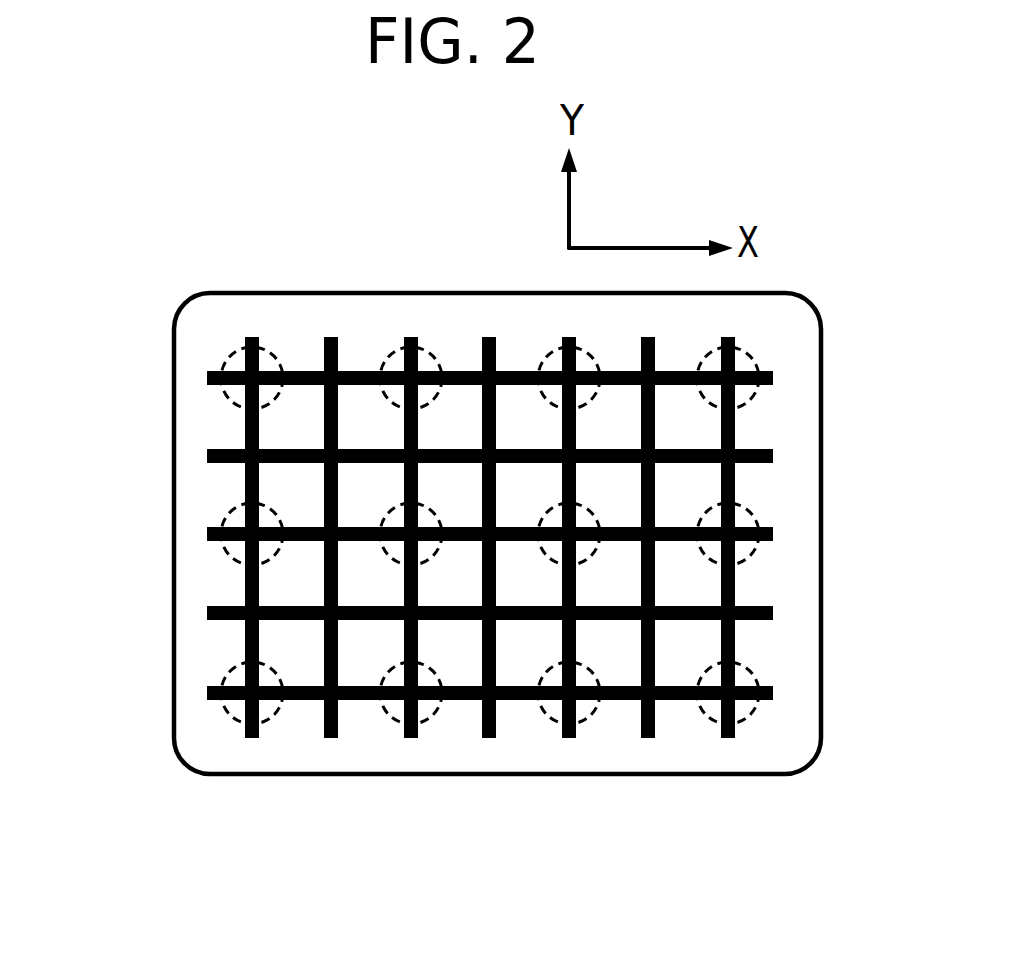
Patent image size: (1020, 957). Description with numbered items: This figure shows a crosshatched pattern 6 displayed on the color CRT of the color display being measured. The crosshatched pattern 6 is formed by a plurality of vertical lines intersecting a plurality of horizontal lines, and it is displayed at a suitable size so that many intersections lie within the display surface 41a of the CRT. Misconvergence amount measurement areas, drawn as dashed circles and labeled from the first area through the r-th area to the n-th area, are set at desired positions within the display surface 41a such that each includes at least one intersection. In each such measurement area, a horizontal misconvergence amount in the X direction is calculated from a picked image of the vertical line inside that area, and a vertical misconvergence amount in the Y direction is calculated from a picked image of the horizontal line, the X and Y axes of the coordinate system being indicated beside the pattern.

The display surface 41a is at (800, 337).
The crosshatched pattern 6 is at (735, 425).